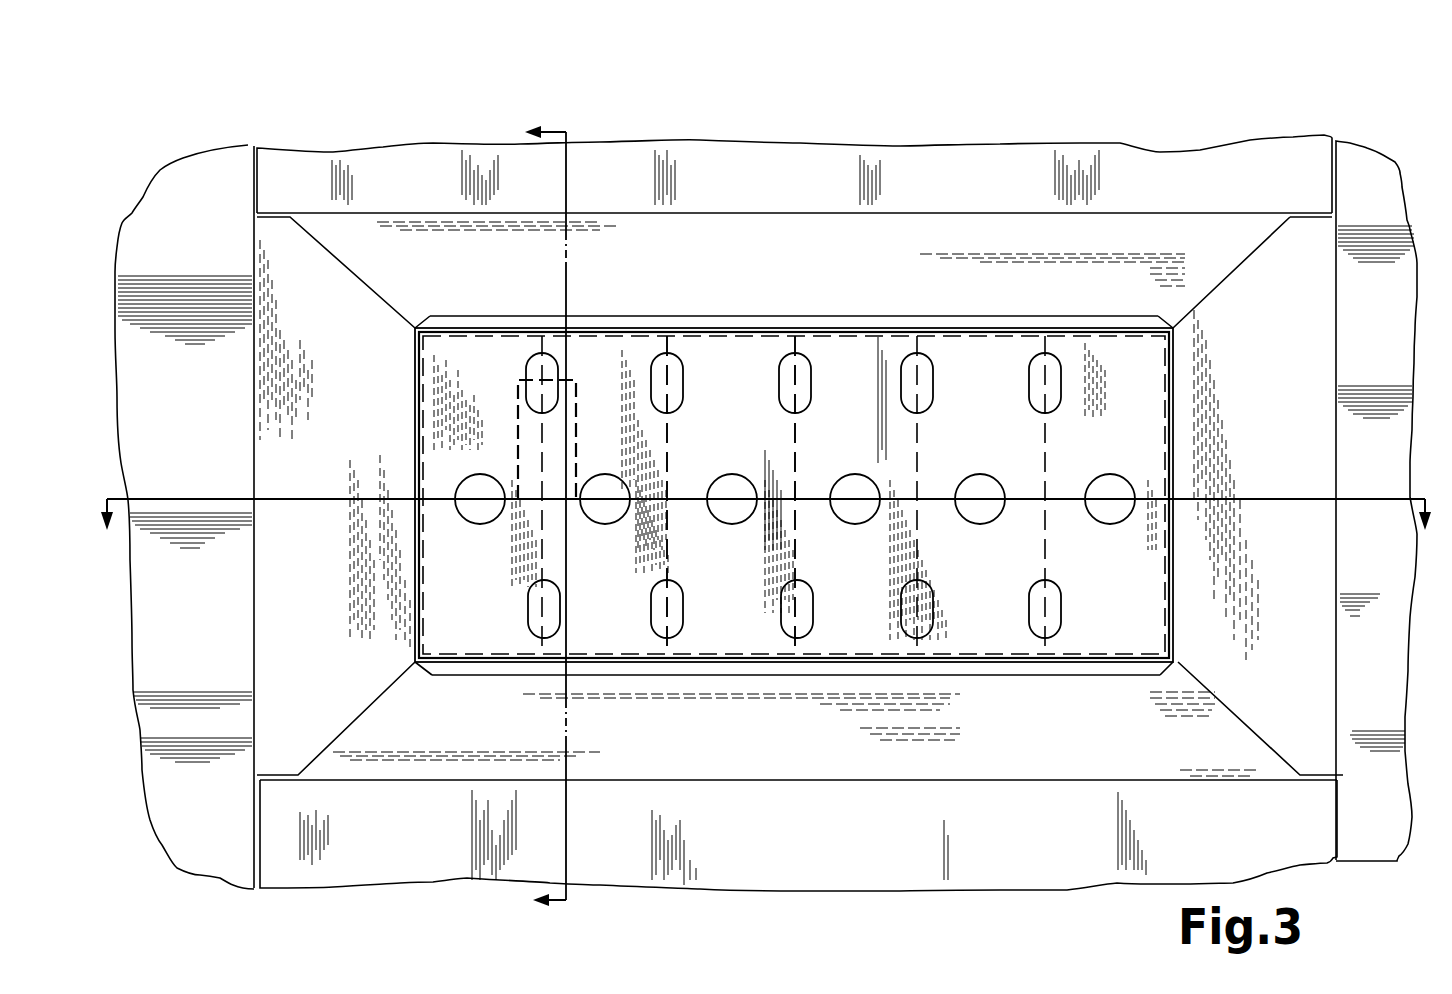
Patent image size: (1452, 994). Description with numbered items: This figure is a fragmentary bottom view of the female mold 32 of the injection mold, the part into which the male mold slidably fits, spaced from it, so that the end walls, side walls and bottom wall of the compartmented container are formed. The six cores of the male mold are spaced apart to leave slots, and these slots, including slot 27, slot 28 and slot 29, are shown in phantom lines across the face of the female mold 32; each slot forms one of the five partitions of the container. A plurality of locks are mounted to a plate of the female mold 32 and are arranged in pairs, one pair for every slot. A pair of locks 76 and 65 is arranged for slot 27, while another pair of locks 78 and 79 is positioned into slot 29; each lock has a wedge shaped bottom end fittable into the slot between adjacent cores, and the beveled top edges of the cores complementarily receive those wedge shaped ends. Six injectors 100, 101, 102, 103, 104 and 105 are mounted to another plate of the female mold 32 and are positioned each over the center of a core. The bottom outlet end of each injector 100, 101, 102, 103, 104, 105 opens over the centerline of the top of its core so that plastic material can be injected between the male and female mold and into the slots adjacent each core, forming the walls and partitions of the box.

The female mold 32 is at (1199, 112).
The lock 76 is at (530, 358).
The slot 27 is at (563, 348).
The slot 28 is at (670, 340).
The slot 29 is at (793, 343).
The lock 79 is at (808, 360).
The lock 65 is at (533, 637).
The lock 78 is at (787, 628).
The injector 100 is at (477, 476).
The injector 101 is at (612, 476).
The injector 102 is at (722, 482).
The injector 103 is at (852, 474).
The injector 104 is at (970, 476).
The injector 105 is at (1096, 476).